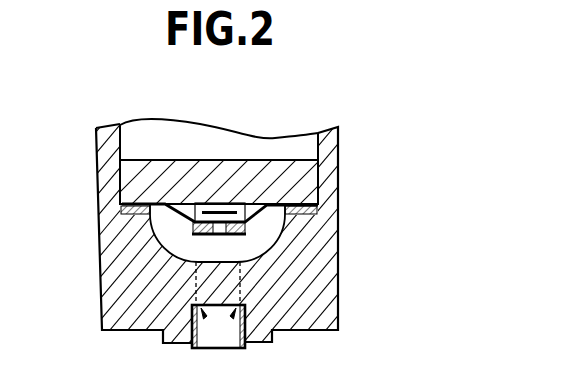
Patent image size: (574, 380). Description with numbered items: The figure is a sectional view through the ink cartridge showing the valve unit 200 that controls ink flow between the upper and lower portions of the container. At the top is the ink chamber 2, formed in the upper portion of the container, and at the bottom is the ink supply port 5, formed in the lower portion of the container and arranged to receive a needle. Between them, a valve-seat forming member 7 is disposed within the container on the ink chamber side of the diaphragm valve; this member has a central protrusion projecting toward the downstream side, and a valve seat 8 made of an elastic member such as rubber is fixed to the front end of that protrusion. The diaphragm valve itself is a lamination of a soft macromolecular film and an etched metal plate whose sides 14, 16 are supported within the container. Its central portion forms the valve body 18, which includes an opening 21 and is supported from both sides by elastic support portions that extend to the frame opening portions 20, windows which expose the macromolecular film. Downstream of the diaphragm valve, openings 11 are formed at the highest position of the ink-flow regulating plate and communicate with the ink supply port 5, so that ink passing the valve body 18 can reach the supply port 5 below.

The valve unit 200 is at (348, 129).
The ink chamber 2 is at (176, 124).
The valve body 18 is at (134, 275).
The valve-seat forming member 7 is at (312, 176).
The frame opening portions 20 is at (158, 240).
The side 14 is at (128, 209).
The side 16 is at (300, 209).
The valve seat 8 is at (214, 210).
The opening 21 is at (212, 238).
The openings 11 is at (238, 282).
The ink supply port 5 is at (210, 340).